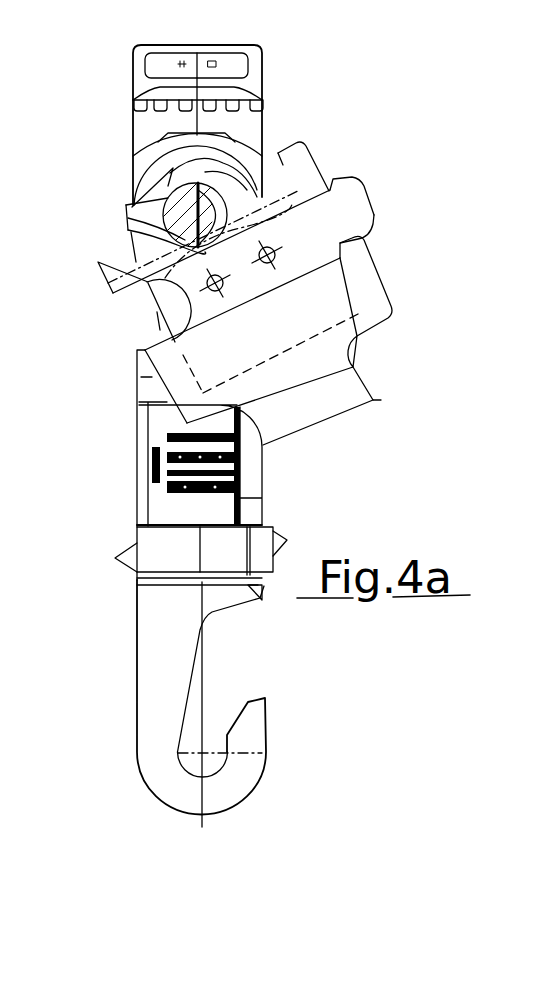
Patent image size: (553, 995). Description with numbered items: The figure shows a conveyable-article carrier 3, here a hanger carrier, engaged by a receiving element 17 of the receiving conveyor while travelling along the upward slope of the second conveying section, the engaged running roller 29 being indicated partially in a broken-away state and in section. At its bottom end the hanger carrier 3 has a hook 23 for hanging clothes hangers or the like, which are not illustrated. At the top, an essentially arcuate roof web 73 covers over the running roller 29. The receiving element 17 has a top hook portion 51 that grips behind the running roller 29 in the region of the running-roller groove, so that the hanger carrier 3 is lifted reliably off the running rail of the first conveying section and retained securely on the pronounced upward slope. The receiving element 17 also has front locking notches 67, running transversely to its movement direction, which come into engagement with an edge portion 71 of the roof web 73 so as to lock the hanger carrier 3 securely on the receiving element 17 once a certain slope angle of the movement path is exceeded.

The roof web 73 is at (148, 152).
The edge portion 71 is at (263, 192).
The front locking notches 67 is at (269, 160).
The running roller 29 is at (123, 210).
The top hook portion 51 is at (142, 219).
The receiving element 17 is at (330, 303).
The conveyable-article carrier 3 is at (267, 476).
The hook 23 is at (227, 795).